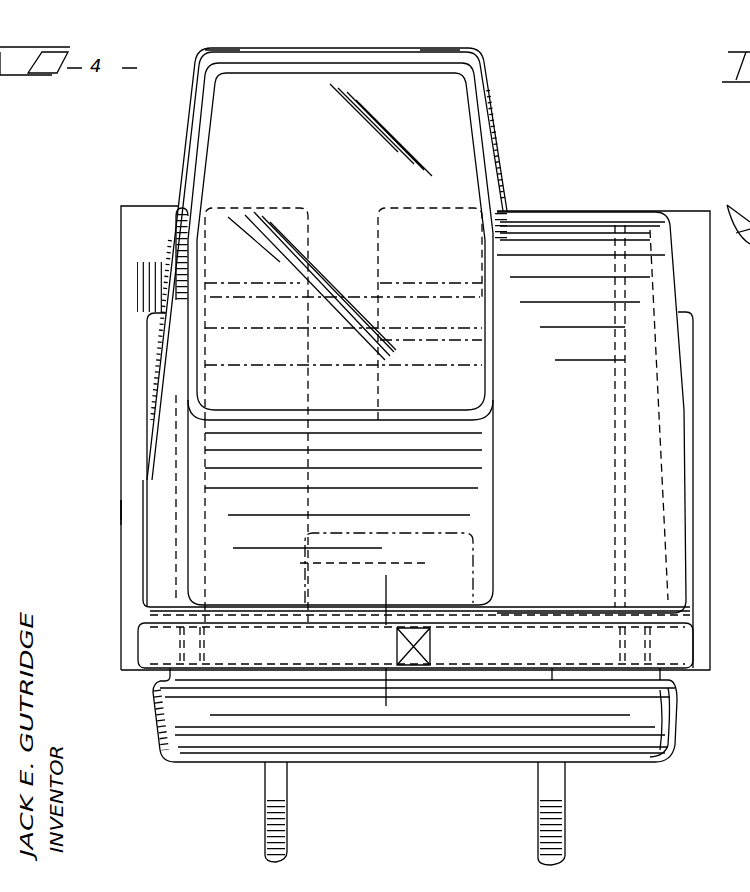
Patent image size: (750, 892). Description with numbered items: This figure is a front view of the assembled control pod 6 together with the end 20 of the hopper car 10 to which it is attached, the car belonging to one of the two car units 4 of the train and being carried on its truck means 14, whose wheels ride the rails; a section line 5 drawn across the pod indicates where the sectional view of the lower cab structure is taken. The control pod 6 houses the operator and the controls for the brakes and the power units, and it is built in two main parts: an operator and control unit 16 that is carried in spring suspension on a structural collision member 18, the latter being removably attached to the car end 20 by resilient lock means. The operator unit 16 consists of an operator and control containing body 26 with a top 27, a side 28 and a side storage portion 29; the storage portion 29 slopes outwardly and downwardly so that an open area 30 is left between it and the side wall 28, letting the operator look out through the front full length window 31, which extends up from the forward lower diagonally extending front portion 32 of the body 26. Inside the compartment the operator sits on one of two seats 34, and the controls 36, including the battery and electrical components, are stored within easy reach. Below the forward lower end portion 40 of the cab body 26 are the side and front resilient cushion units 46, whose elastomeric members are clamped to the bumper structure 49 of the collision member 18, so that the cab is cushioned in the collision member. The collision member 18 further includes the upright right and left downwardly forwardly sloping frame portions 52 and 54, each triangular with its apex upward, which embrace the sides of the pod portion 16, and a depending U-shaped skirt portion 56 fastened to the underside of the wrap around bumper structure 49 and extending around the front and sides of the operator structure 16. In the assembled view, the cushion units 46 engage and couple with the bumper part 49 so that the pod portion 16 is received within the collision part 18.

The two car unit 4 is at (112, 425).
The section line 5- 5 is at (420, 592).
The control pod 6 is at (509, 140).
The hopper car 10 is at (122, 276).
The truck means 14 is at (300, 837).
The operator and control unit 16 is at (176, 150).
The structural collision member 18 is at (447, 763).
The end of car unit 20 is at (134, 510).
The operator and control containing body 26 is at (437, 62).
The top 27 is at (256, 50).
The side 28 is at (147, 418).
The side storage portion 29 is at (680, 297).
The open area 30 is at (227, 527).
The front full length window 31 is at (368, 262).
The forward lower diagonally extending front portion 32 is at (378, 492).
The seat 34 is at (243, 216).
The controls 36 is at (408, 548).
The forward lower end portion 40 is at (523, 608).
The cushion units 46 is at (205, 632).
The bumper structure 49 is at (553, 672).
The right frame portion 52 is at (145, 369).
The left frame portion 54 is at (694, 382).
The skirt portion 56 is at (610, 760).